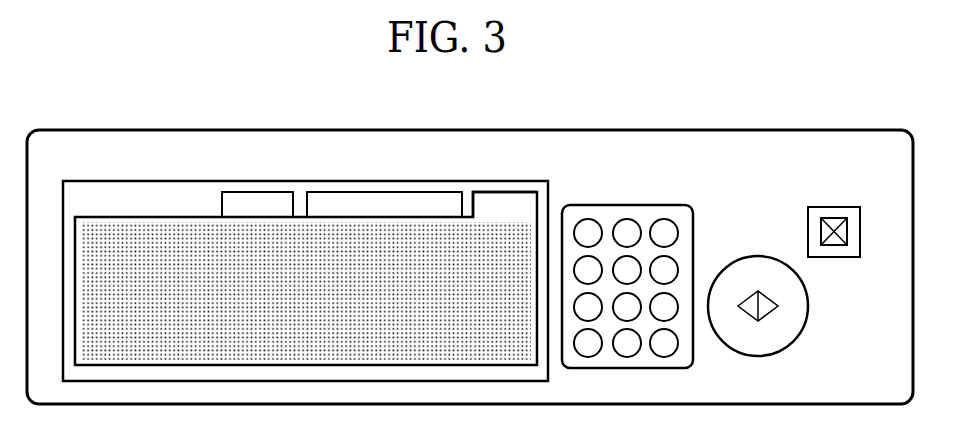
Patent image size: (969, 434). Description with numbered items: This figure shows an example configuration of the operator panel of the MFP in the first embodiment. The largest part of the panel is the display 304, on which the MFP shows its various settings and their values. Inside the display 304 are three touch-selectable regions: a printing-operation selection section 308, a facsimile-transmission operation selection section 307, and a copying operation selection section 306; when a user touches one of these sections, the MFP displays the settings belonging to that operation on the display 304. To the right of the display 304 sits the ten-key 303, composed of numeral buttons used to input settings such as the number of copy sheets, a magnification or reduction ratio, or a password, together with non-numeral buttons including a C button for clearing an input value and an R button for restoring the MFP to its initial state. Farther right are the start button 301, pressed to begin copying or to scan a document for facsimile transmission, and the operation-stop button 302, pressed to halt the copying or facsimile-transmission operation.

The start button 301 is at (753, 256).
The operation-stop button 302 is at (833, 207).
The ten-key 303 is at (628, 205).
The display 304 is at (536, 182).
The copying operation selection section 306 is at (487, 192).
The facsimile-transmission operation selection section 307 is at (428, 192).
The printing-operation selection section 308 is at (288, 192).